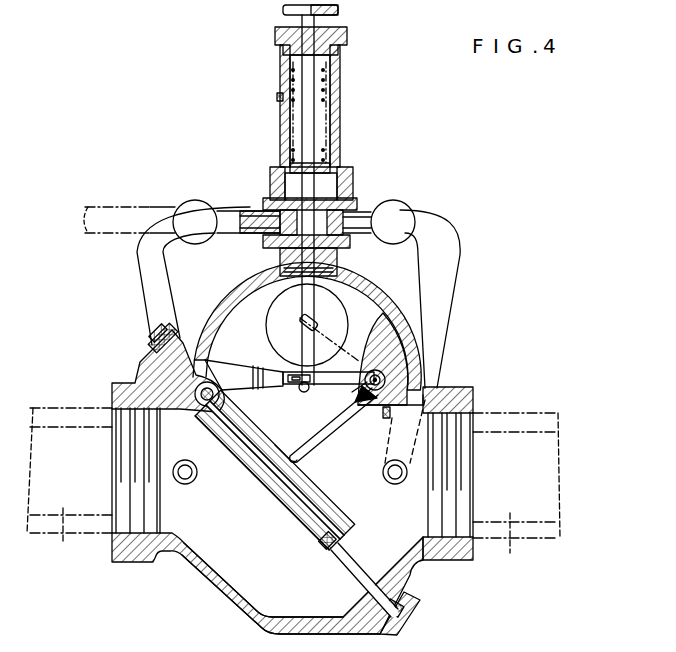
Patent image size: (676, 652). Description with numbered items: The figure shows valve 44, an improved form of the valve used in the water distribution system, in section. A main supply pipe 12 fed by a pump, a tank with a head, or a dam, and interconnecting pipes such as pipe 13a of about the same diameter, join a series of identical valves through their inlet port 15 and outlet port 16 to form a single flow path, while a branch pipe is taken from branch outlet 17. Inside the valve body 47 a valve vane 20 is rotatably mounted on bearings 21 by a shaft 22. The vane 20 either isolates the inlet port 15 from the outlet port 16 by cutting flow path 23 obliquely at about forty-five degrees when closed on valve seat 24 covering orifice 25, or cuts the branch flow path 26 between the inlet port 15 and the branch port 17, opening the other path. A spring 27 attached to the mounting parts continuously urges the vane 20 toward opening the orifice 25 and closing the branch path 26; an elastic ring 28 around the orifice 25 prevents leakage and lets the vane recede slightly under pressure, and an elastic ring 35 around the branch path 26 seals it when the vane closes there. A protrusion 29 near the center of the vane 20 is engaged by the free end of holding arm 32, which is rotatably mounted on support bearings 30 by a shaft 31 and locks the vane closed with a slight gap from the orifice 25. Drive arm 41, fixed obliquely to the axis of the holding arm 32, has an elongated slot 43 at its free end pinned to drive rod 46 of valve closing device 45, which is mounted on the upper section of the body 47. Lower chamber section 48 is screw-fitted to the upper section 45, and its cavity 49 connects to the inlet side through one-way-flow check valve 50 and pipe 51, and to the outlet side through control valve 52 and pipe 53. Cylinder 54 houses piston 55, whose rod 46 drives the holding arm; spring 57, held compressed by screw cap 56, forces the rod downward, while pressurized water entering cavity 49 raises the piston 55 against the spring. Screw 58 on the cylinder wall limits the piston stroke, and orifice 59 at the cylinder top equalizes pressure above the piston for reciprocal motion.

The main supply pipe 12 is at (491, 482).
The interconnecting pipe 13a is at (93, 491).
The inlet port 15 is at (412, 560).
The outlet port 16 is at (185, 520).
The branch outlet 17 is at (336, 309).
The valve vane 20 is at (337, 523).
The bearings 21 is at (188, 350).
The shaft 22 is at (196, 410).
The flow path 23 is at (223, 495).
The valve seat 24 is at (338, 572).
The orifice 25 is at (268, 490).
The flow path 26 is at (250, 372).
The spring 27 is at (216, 430).
The elastic ring 28 is at (322, 545).
The protrusion 29 is at (289, 455).
The support bearings 30 is at (440, 342).
The shaft 31 is at (392, 378).
The holding arm 32 is at (322, 437).
The elastic ring 35 is at (377, 435).
The drive arm 41 is at (350, 382).
The elongated slot 43 is at (300, 390).
The valve 44 is at (215, 592).
The valve closing device 45 is at (352, 129).
The drive rod 46 is at (300, 304).
The valve body 47 is at (380, 300).
The lower chamber section 48 is at (272, 198).
The cavity 49 is at (268, 242).
The one-way-flow check valve 50 is at (398, 210).
The pipe 51 is at (447, 307).
The control valve 52 is at (200, 210).
The pipe 53 is at (150, 305).
The cylinder 54 is at (338, 75).
The piston 55 is at (332, 190).
The screw cap 56 is at (338, 40).
The spring 57 is at (292, 153).
The screw 58 is at (276, 98).
The orifice 59 is at (282, 80).